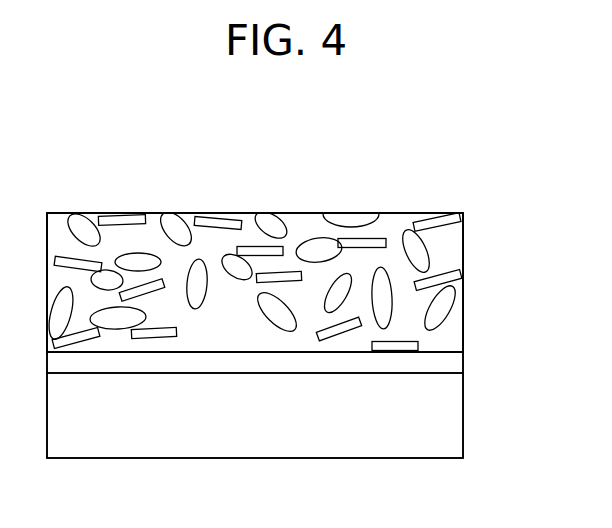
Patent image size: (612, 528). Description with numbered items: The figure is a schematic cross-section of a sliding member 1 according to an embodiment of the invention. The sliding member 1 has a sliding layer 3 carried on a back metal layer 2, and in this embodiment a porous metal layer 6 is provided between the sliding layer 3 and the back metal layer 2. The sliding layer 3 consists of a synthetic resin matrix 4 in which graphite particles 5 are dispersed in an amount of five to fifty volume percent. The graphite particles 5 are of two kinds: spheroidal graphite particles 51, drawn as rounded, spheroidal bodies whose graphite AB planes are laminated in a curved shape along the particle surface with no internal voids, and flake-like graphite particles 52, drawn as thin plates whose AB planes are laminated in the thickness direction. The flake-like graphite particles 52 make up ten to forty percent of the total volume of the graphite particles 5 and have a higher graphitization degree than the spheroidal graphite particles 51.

The sliding member 1 is at (478, 209).
The back metal layer 2 is at (447, 407).
The sliding layer 3 is at (468, 261).
The synthetic resin matrix 4 is at (150, 233).
The graphite particles 5 is at (206, 143).
The spheroidal graphite particles 51 is at (315, 246).
The flake-like graphite particles 52 is at (232, 218).
The porous metal layer 6 is at (447, 363).